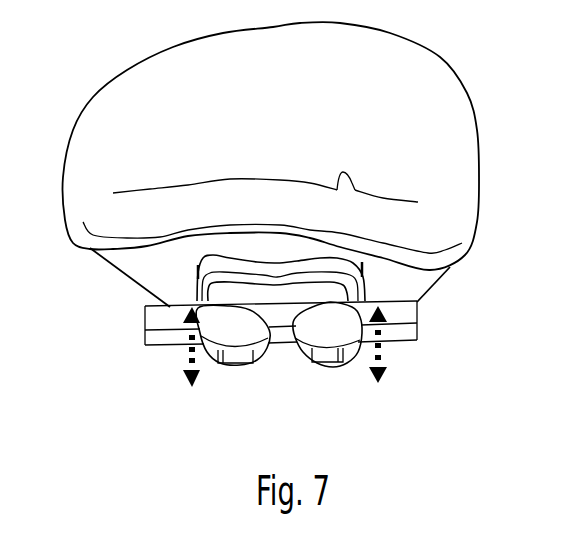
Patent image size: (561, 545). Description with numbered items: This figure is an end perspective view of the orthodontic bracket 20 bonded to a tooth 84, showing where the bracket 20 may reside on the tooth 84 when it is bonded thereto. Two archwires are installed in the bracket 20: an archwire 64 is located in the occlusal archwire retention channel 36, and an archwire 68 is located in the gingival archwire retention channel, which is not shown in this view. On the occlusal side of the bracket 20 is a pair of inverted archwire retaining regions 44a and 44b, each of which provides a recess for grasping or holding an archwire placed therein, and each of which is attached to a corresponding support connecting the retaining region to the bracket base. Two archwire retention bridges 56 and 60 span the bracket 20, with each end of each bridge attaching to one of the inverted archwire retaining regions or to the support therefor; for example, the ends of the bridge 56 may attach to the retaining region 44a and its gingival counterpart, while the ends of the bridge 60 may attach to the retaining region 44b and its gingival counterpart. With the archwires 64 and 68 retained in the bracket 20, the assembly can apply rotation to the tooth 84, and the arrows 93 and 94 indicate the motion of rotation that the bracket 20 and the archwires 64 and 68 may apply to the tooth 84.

The tooth 84 is at (298, 84).
The bracket 20 is at (336, 256).
The occlusal archwire retention channel 36 is at (277, 256).
The inverted archwire retaining region 44a is at (350, 319).
The inverted archwire retaining region 44b is at (208, 314).
The archwire 64 is at (148, 311).
The archwire 68 is at (159, 345).
The archwire retention bridge 60 is at (221, 371).
The archwire retention bridge 56 is at (328, 366).
The arrow 93 is at (180, 361).
The arrow 94 is at (390, 352).